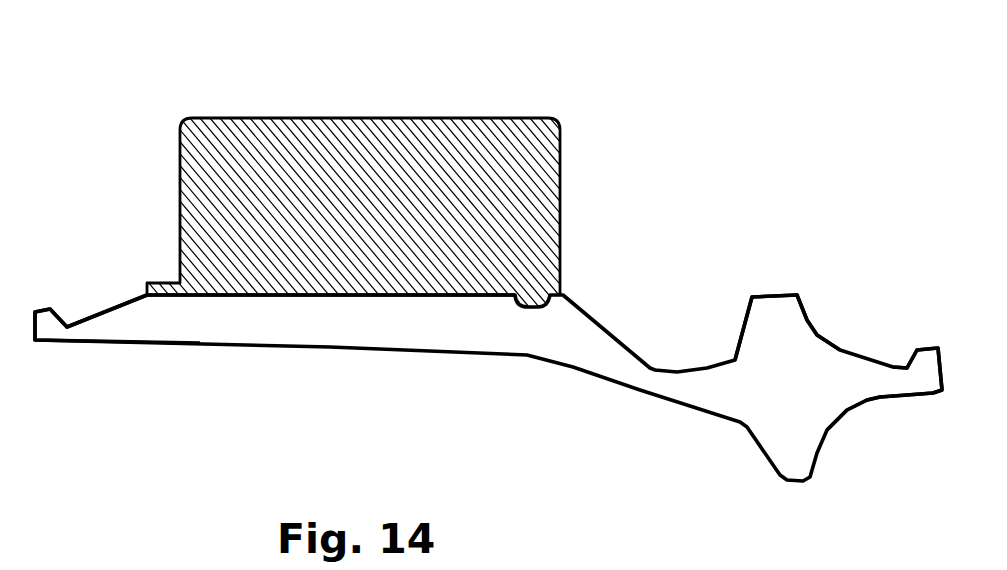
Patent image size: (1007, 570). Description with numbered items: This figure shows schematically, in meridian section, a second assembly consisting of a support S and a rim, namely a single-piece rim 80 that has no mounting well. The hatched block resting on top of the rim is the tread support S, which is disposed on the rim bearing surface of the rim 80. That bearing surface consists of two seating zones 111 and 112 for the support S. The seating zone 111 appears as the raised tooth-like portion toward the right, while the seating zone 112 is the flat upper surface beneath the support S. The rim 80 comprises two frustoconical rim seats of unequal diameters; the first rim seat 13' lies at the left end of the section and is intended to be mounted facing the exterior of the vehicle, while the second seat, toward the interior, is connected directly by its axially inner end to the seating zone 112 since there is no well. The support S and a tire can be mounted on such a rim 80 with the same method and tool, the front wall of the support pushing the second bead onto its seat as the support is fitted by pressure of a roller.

The support S is at (468, 200).
The seating zone 111 is at (773, 293).
The seating zone 112 is at (360, 297).
The single-piece rim 80 is at (268, 322).
The first rim seat 13' is at (117, 374).